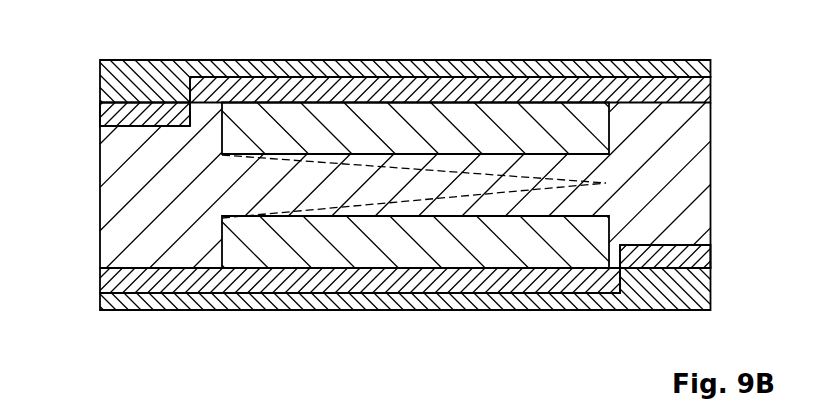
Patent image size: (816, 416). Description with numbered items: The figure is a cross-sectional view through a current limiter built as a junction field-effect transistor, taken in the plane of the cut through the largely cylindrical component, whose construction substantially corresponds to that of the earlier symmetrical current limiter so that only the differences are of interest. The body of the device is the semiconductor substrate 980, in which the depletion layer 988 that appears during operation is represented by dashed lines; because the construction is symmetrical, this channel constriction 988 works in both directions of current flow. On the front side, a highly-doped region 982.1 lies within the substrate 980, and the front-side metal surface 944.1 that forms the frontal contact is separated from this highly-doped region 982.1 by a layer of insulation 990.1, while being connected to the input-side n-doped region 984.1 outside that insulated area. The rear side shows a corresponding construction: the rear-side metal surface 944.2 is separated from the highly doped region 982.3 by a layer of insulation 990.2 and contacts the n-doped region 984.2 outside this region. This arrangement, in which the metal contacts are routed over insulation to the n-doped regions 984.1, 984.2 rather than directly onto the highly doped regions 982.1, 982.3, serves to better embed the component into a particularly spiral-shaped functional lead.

The front-side metal surface 944.1 is at (106, 81).
The layer of insulation 990.1 is at (511, 86).
The input-side n-doped region 984.1 is at (106, 114).
The highly-doped region 982.1 is at (394, 122).
The highly doped region 982.3 is at (412, 253).
The semiconductor substrate 980 is at (692, 132).
The depletion layer 988 is at (593, 195).
The n-doped region 984.2 is at (705, 257).
The layer of insulation 990.2 is at (115, 278).
The rear-side metal surface 944.2 is at (115, 313).